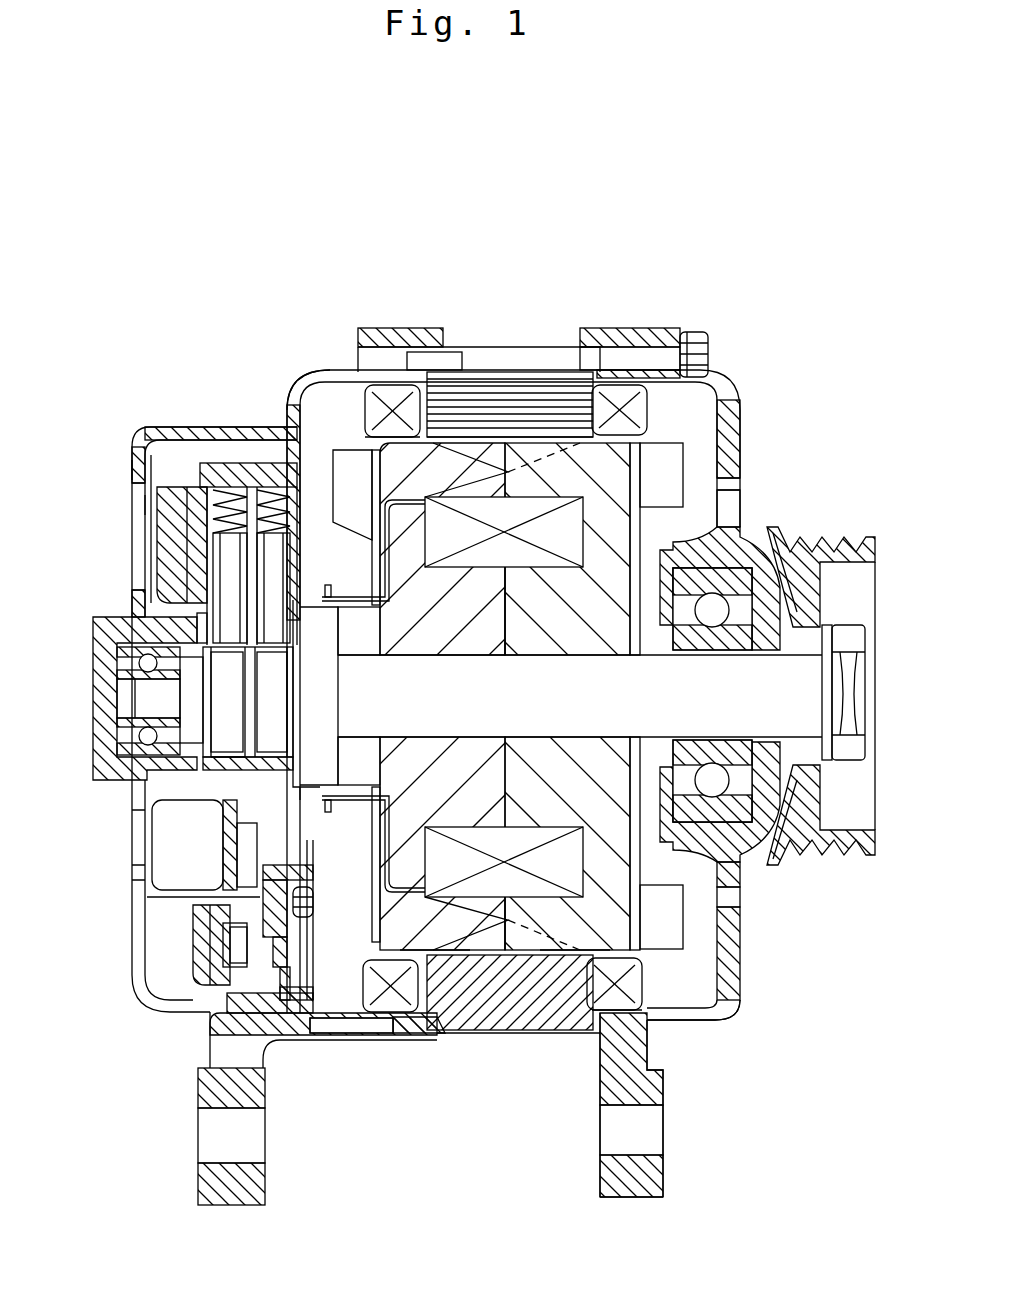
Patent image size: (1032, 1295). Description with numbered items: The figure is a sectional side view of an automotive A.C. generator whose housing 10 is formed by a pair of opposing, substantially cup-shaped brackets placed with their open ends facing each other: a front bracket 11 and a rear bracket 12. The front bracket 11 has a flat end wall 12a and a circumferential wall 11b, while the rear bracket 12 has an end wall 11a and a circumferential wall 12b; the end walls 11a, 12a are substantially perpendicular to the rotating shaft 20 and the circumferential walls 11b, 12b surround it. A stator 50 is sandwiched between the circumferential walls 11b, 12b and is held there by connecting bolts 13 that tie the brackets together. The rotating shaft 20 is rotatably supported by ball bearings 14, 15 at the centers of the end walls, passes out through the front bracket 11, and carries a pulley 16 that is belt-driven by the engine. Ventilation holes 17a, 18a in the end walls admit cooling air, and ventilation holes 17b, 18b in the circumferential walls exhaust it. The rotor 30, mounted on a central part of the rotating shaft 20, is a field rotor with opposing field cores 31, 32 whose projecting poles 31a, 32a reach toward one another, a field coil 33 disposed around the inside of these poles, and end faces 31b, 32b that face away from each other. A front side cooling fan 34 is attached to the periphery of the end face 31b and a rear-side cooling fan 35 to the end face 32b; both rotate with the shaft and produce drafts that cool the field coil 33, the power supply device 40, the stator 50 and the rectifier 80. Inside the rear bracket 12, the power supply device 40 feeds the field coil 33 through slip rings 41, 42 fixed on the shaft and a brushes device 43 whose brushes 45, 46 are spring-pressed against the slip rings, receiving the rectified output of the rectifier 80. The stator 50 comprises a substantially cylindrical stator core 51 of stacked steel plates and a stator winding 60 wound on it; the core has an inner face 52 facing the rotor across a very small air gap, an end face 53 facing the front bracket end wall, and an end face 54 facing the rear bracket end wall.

The housing 10 is at (437, 737).
The front bracket 11 is at (740, 755).
The end wall 11a is at (735, 920).
The circumferential wall 11b is at (700, 1020).
The rear bracket 12 is at (168, 726).
The end wall 12a is at (133, 470).
The circumferential wall 12b is at (235, 425).
The connecting bolts 13 is at (645, 355).
The ball bearing 14 is at (725, 560).
The ball bearing 15 is at (115, 780).
The pulley 16 is at (850, 530).
The ventilation holes 17a is at (730, 488).
The ventilation holes 17b is at (715, 375).
The ventilation holes 18a is at (140, 503).
The ventilation holes 18b is at (297, 402).
The rotating shaft 20 is at (786, 697).
The rotor 30 is at (497, 786).
The field core 31 is at (583, 740).
The projecting poles 31a is at (540, 1000).
The end face 31b is at (648, 740).
The field core 32 is at (432, 740).
The projecting poles 32a is at (420, 1030).
The end face 32b is at (363, 738).
The field coil 33 is at (525, 740).
The front side cooling fan 34 is at (668, 460).
The rear-side cooling fan 35 is at (345, 462).
The power supply device 40 is at (171, 503).
The slip ring 41 is at (270, 712).
The slip ring 42 is at (230, 745).
The brushes device 43 is at (227, 557).
The brush 45 is at (270, 657).
The brush 46 is at (222, 657).
The stator 50 is at (505, 680).
The stator core 51 is at (480, 410).
The inner face 52 is at (470, 462).
The end face 53 is at (605, 400).
The end face 54 is at (400, 345).
The stator winding 60 is at (390, 410).
The rectifier 80 is at (172, 897).